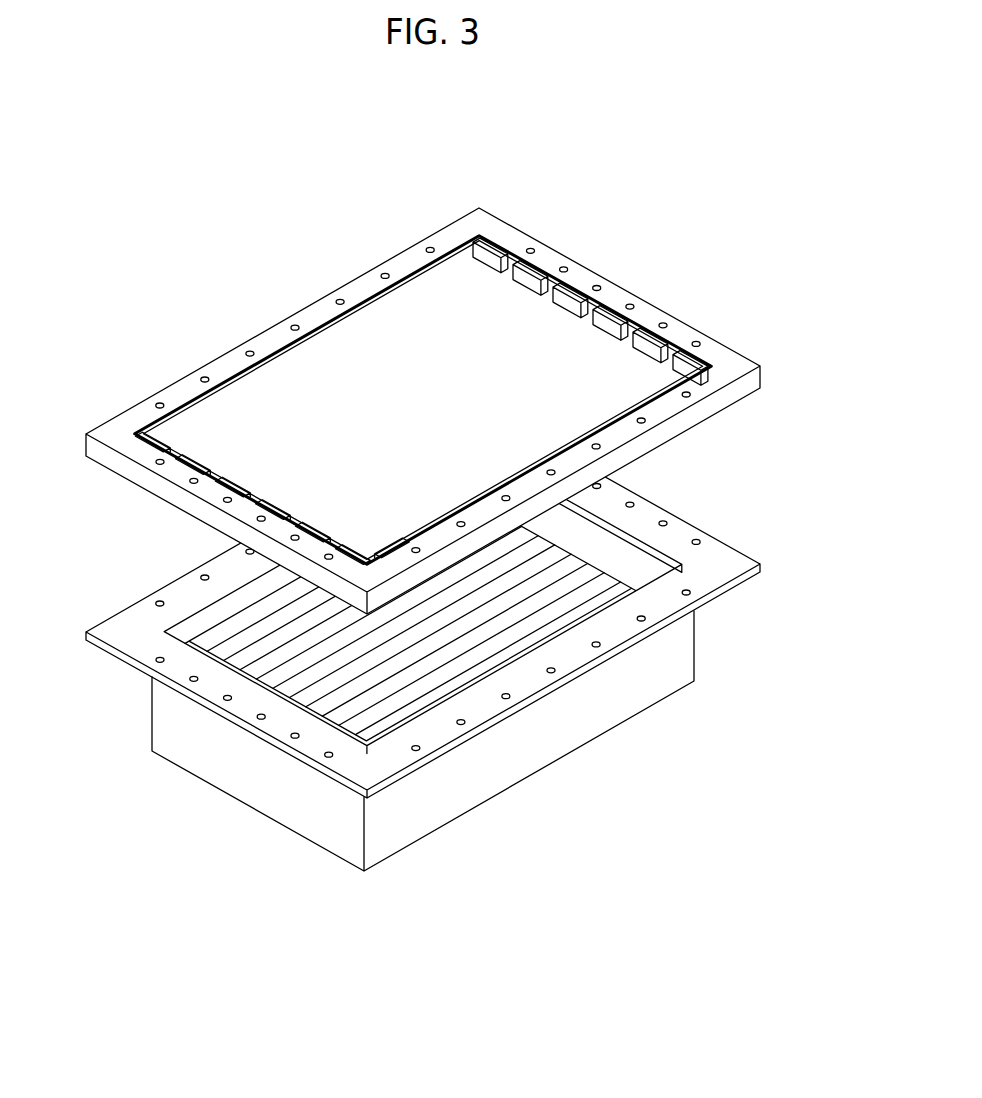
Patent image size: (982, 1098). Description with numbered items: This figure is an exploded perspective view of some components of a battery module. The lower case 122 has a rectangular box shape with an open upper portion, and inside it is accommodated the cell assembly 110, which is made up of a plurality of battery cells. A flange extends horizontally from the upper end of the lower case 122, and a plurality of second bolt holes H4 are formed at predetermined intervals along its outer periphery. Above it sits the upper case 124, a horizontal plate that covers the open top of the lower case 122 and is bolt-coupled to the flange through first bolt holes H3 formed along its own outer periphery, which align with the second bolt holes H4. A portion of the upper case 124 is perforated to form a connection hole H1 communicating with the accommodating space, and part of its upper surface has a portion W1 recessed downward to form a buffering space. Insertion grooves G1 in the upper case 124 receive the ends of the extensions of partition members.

The upper case 124 is at (155, 380).
The insertion groove G1 is at (502, 253).
The recessed portion W1 is at (320, 343).
The first bolt hole H3 is at (645, 420).
The connection hole H1 is at (388, 546).
The lower case 122 is at (698, 658).
The cell assembly 110 is at (623, 547).
The second bolt hole H4 is at (645, 619).